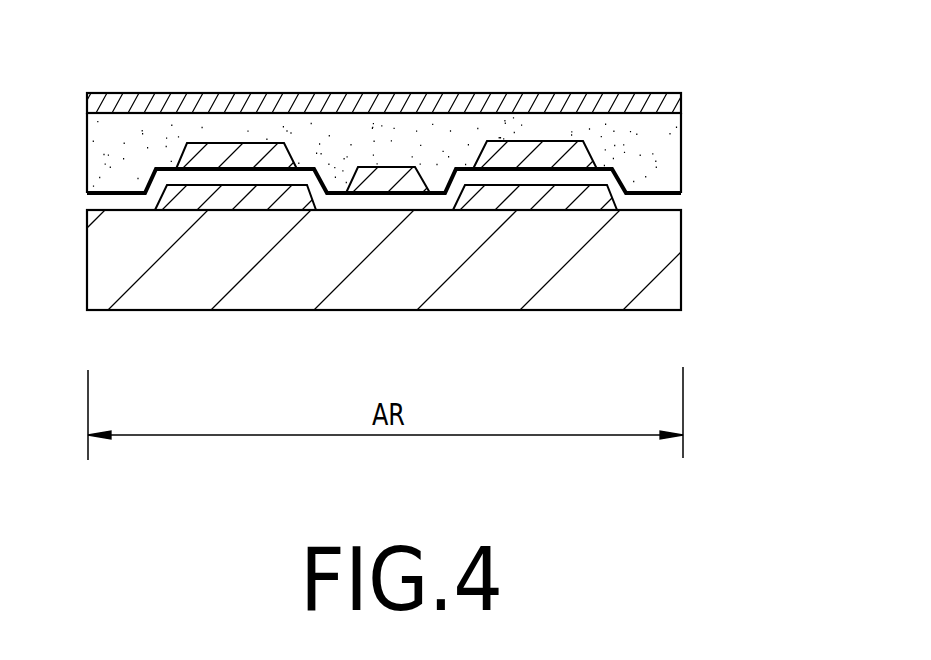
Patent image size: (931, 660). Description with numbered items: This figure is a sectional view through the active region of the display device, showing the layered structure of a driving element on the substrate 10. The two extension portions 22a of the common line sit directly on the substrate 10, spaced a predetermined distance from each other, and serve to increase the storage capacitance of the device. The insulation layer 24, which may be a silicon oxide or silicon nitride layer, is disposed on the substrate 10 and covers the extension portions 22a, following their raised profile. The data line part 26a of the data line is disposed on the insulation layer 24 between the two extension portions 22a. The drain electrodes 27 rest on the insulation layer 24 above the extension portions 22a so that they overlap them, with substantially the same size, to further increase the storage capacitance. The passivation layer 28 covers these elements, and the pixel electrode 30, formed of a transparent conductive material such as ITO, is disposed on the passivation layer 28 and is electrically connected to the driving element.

The substrate 10 is at (652, 263).
The extension portions 22a is at (238, 193).
The insulation layer 24 is at (668, 200).
The data line part 26a is at (385, 183).
The drain electrodes 27 is at (243, 152).
The passivation layer 28 is at (670, 145).
The pixel electrode 30 is at (532, 95).